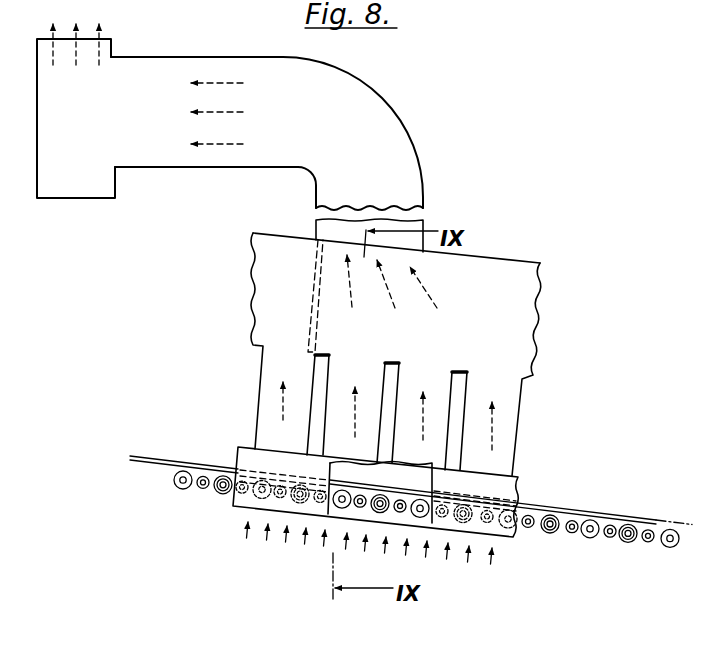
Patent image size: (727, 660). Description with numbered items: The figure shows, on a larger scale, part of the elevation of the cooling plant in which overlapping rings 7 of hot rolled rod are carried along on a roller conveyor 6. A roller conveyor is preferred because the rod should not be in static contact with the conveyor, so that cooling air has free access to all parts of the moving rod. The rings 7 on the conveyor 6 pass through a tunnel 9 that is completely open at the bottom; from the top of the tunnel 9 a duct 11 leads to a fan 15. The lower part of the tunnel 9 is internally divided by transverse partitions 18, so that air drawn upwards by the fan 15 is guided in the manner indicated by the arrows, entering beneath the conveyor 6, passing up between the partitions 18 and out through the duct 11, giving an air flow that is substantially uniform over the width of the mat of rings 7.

The fan 15 is at (97, 190).
The duct 11 is at (227, 162).
The tunnel 9 is at (272, 362).
The transverse partitions 18 is at (467, 393).
The overlapping rings 7 is at (578, 509).
The conveyor 6 is at (588, 539).